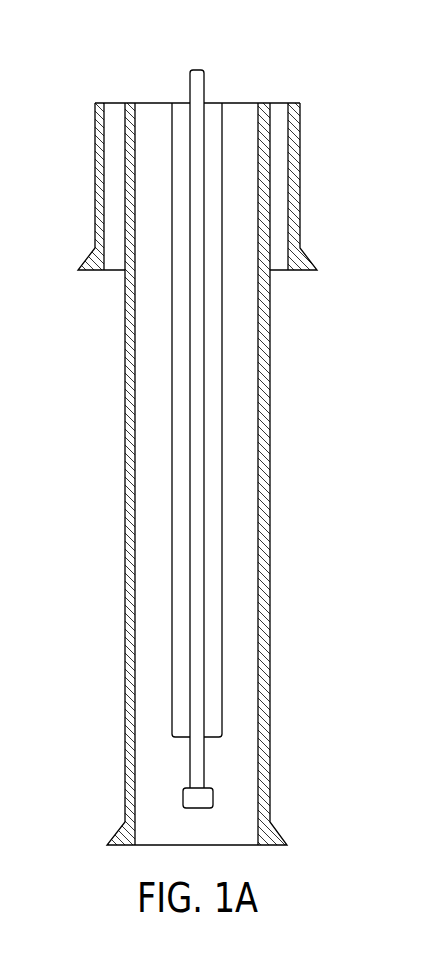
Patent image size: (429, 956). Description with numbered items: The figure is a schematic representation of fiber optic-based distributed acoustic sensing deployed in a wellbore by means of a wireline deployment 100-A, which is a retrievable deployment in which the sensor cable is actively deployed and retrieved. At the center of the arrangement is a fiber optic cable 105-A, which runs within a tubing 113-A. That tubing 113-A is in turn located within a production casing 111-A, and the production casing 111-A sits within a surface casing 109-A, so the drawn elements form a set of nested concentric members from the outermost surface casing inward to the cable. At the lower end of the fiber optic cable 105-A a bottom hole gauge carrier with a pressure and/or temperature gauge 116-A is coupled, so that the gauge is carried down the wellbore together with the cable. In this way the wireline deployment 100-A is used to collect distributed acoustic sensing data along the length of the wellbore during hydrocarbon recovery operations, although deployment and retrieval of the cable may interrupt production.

The wireline deployment 100-A is at (124, 68).
The fiber optic cable 105-A is at (188, 465).
The surface casing 109-A is at (302, 178).
The production casing 111-A is at (272, 326).
The tubing 113-A is at (170, 603).
The pressure and/or temperature (PT) gauge 116-A is at (181, 799).